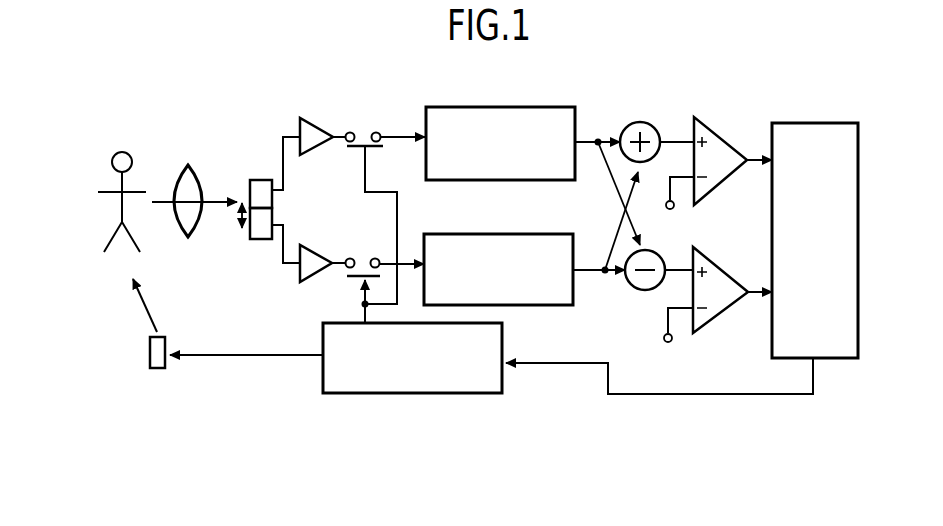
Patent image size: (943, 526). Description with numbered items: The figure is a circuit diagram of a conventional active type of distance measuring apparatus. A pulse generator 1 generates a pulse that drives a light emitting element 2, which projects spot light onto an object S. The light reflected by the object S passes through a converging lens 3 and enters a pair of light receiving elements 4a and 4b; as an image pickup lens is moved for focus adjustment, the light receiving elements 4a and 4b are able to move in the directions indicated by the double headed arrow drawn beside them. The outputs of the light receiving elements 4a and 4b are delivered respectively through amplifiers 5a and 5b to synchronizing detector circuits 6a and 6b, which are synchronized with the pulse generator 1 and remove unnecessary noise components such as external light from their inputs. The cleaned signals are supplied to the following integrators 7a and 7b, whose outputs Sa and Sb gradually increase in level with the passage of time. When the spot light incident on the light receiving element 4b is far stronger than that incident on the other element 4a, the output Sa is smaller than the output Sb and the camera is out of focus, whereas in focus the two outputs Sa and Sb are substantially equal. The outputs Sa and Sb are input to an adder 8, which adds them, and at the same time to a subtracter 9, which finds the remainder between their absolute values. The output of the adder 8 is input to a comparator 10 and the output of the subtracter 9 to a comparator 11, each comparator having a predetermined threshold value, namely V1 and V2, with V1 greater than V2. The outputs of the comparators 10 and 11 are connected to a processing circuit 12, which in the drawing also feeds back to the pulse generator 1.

The pulse generator 1 is at (387, 385).
The light emitting element 2 is at (158, 370).
The converging lens 3 is at (188, 165).
The light receiving element 4a is at (255, 182).
The light receiving element 4b is at (257, 241).
The amplifier 5a is at (312, 118).
The amplifier 5b is at (312, 280).
The synchronizing detector circuit 6a is at (368, 129).
The synchronizing detector circuit 6b is at (360, 257).
The integrator 7a is at (547, 107).
The integrator 7b is at (554, 305).
The adder 8 is at (642, 122).
The subtracter 9 is at (646, 292).
The comparator 10 is at (718, 135).
The comparator 11 is at (724, 311).
The processing circuit 12 is at (842, 361).
The object S is at (123, 151).
The output of integrator 7a Sa is at (615, 180).
The output of integrator 7b Sb is at (615, 237).
The threshold value V1 is at (669, 219).
The threshold value V2 is at (669, 350).